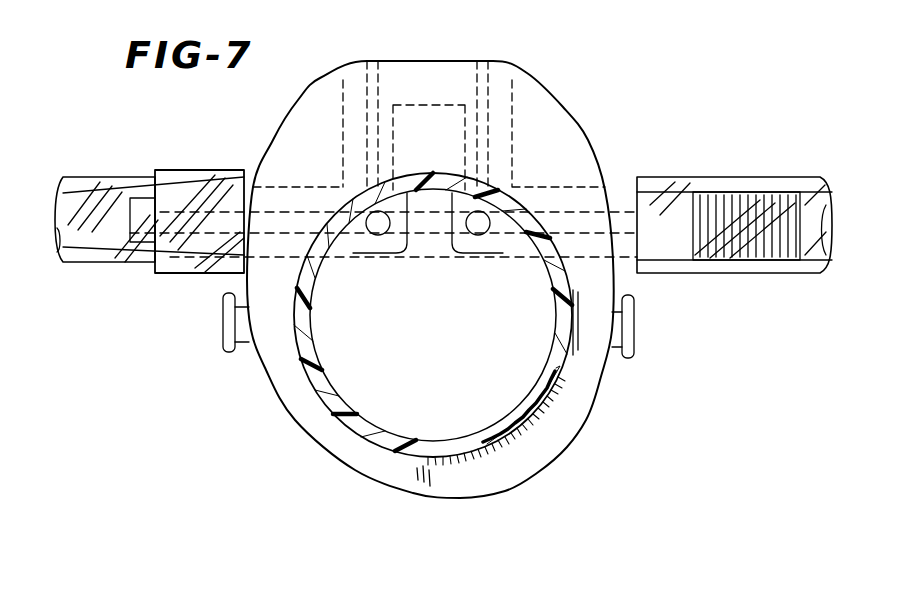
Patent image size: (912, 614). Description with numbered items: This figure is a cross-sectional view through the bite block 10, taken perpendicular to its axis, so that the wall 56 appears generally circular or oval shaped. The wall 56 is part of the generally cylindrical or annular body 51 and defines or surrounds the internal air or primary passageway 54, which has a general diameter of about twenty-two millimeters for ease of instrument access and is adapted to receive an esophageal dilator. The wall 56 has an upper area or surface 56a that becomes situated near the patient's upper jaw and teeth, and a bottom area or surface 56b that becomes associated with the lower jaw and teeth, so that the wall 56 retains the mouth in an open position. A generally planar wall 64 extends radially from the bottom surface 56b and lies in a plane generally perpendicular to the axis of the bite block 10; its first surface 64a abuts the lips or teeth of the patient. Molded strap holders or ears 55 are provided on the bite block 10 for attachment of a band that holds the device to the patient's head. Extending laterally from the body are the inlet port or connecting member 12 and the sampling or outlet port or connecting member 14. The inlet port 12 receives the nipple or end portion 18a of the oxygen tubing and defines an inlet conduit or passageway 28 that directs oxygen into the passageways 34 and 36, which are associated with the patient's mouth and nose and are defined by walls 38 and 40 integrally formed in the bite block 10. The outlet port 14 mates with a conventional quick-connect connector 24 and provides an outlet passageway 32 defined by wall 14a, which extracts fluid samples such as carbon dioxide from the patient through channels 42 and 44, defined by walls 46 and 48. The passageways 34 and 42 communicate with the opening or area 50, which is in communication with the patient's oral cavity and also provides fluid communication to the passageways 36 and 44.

The bite block 10 is at (568, 100).
The inlet port, connecting portion or member 12 is at (284, 184).
The sampling port, outlet port, connecting portion or member 14 is at (603, 152).
The wall 14a is at (742, 195).
The nipple or end portion 18a is at (190, 168).
The quick-connect connector 24 is at (788, 178).
The inlet, conduit or passageway 28 is at (120, 212).
The outlet conduit or passageway 32 is at (616, 174).
The passageway, conduit, channel or duct 34 is at (374, 232).
The passageway, conduit, channel or duct 36 is at (378, 122).
The wall 38 is at (390, 230).
The wall 40 is at (354, 131).
The passageway, conduit, channel or duct 42 is at (470, 232).
The passageway, conduit, channel or duct 44 is at (478, 118).
The wall 46 is at (488, 230).
The wall 48 is at (500, 137).
The common opening, aperture or area 50 is at (435, 86).
The annular body 51 is at (297, 362).
The internal air or primary passageway 54 is at (362, 374).
The molded strap, holders, connectors or ears 55 is at (222, 320).
The wall 56 is at (548, 336).
The upper area or surface 56a is at (438, 176).
The bottom area or surface 56b is at (428, 457).
The generally planar wall 64 is at (597, 397).
The first surface 64a is at (490, 468).